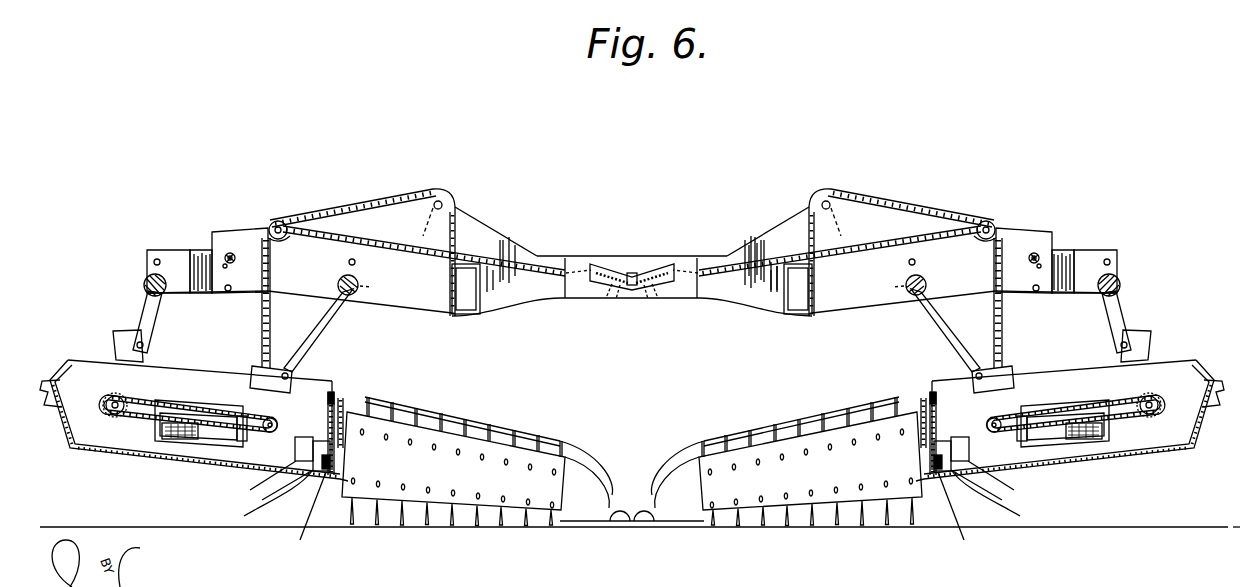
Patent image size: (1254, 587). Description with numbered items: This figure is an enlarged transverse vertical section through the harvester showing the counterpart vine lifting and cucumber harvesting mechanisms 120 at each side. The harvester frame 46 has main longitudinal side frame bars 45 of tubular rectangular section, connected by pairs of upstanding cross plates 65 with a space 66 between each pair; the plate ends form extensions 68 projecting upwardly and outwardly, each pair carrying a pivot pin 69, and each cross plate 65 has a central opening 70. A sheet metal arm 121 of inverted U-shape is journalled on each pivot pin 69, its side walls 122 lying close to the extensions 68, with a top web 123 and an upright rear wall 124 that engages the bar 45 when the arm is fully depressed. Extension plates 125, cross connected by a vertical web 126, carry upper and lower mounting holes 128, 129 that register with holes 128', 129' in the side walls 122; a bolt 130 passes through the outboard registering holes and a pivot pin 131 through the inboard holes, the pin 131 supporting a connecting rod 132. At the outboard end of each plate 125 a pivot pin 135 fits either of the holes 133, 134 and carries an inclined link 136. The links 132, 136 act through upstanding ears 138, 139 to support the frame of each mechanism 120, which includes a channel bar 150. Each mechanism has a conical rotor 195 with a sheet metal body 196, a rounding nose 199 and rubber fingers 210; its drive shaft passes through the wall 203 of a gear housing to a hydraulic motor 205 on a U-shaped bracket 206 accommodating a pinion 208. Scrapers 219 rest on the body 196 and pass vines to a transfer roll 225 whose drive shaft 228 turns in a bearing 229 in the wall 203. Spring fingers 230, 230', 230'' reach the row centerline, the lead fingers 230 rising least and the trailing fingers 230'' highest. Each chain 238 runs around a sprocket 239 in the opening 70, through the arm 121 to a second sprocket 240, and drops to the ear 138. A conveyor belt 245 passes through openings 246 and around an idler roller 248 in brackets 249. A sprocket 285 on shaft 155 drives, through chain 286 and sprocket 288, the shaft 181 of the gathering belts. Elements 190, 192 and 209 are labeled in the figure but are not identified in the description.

The main longitudinal side frame bar 45 is at (483, 315).
The harvester frame 46 is at (529, 190).
The cross plate 65 is at (697, 257).
The space 66 is at (684, 257).
The extension 68 is at (460, 208).
The pivot pin 69 is at (441, 202).
The opening 70 is at (622, 269).
The vine lifting and cucumber harvesting mechanism 120 is at (204, 221).
The sheet metal arm 121 is at (366, 196).
The side wall 122 is at (445, 318).
The top wall 123 is at (398, 205).
The upright rear wall 124 is at (813, 289).
The extension plate 125 is at (172, 248).
The vertical web 126 is at (197, 250).
The upper mounting hole 128 is at (661, 235).
The hole 128' is at (622, 288).
The lower mounting hole 129 is at (637, 320).
The hole 129' is at (644, 320).
The bolt 130 is at (230, 252).
The pivot pin 131 is at (337, 285).
The connecting rod 132 is at (322, 330).
The upper hole 133 is at (155, 260).
The lower hole 134 is at (147, 282).
The pivot pin 135 is at (148, 292).
The connecting rod 136 is at (143, 316).
The upstanding ear 138 is at (278, 363).
The upstanding ear 139 is at (113, 347).
The metal channel bar 150 is at (45, 390).
The shaft 155 is at (110, 418).
The shaft 181 is at (248, 442).
The hopper top edge 190 is at (198, 361).
The hopper 192 is at (100, 463).
The conical rotor 195 is at (555, 409).
The conical sheet metal body 196 is at (450, 513).
The rounding nose 199 is at (652, 480).
The wall 203 is at (340, 484).
The hydraulic motor 205 is at (300, 463).
The U-shaped bracket 206 is at (992, 546).
The pinion 208 is at (300, 540).
The hopper rim 209 is at (66, 454).
The rubber finger 210 is at (392, 515).
The scraper 219 is at (508, 428).
The transfer roll 225 is at (432, 405).
The drive shaft 228 is at (348, 400).
The bearing 229 is at (341, 396).
The lead spring finger 230 is at (687, 474).
The spring finger 230' is at (582, 474).
The trailing spring finger 230'' is at (650, 535).
The chain 238 is at (540, 259).
The sprocket 239 is at (645, 290).
The second sprocket 240 is at (292, 226).
The endless chain conveyor belt 245 is at (216, 448).
The opening 246 is at (222, 410).
The idler roller 248 is at (1096, 440).
The bracket 249 is at (162, 442).
The sprocket 285 is at (110, 398).
The chain 286 is at (152, 397).
The sprocket 288 is at (274, 423).